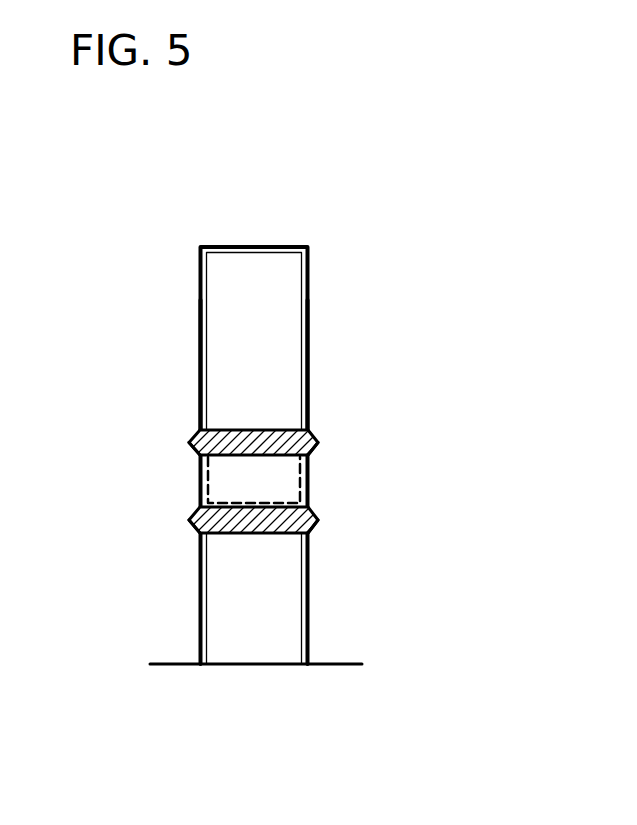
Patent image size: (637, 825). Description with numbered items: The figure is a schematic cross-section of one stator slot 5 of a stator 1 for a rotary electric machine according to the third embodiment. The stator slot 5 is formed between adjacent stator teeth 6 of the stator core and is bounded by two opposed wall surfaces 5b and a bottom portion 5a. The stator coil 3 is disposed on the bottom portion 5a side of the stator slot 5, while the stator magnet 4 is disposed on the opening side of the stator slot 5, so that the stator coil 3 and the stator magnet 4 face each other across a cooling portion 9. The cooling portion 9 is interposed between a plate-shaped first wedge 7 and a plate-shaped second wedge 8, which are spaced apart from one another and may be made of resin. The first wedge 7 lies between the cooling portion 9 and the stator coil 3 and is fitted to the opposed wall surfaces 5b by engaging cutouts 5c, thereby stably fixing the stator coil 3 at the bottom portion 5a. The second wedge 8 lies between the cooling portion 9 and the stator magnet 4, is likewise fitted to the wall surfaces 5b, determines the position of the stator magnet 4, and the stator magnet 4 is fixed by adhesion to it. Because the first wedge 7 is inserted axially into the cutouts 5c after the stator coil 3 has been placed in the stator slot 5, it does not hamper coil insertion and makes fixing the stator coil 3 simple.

The stator 1 is at (411, 214).
The stator coil 3 is at (280, 376).
The stator magnet 4 is at (233, 645).
The stator slot 5 is at (237, 245).
The bottom portion 5a is at (265, 252).
The wall surface 5b is at (200, 340).
The cutout 5c is at (194, 449).
The stator tooth 6 is at (172, 647).
The first wedge 7 is at (195, 437).
The second wedge 8 is at (194, 518).
The cooling portion 9 is at (301, 476).